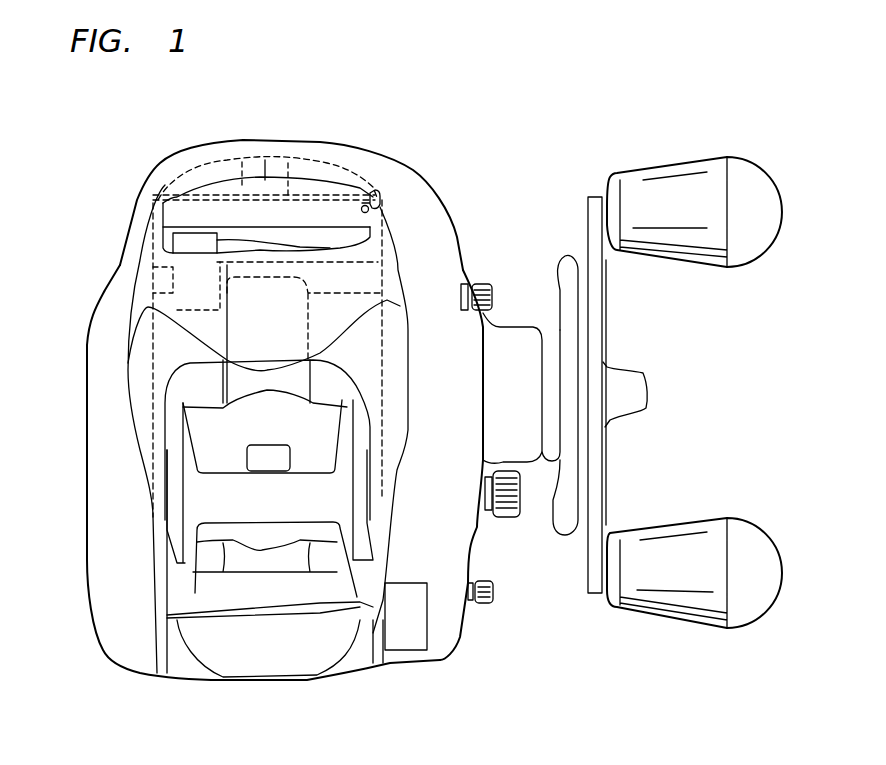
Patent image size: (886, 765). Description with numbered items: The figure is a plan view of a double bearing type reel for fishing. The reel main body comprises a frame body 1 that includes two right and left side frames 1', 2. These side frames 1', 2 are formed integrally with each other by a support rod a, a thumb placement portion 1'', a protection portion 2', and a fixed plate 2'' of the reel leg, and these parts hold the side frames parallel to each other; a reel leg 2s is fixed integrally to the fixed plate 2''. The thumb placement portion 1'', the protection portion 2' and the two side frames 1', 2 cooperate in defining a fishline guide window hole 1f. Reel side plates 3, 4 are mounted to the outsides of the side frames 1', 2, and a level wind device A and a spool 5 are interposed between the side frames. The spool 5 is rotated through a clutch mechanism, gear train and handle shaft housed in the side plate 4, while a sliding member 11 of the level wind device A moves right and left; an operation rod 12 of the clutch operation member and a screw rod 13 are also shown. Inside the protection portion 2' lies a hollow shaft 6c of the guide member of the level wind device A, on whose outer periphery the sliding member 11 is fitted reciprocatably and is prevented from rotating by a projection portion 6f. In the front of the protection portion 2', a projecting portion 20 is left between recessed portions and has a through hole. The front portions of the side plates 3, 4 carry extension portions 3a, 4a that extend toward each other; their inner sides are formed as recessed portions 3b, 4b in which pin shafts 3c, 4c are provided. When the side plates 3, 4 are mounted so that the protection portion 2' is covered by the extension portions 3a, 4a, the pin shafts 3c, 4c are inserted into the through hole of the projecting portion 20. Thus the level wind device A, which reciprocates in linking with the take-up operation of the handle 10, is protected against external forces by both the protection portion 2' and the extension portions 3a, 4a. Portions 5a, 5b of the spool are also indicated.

The frame body 1 is at (243, 472).
The side frame 1' is at (229, 429).
The thumb placement portion 1'' is at (213, 436).
The fishline guide window hole 1f is at (378, 188).
The side frame 2 is at (328, 422).
The protection portion 2' is at (268, 140).
The fixed plate 2'' is at (304, 416).
The projecting portion 20 is at (245, 161).
The reel leg 2s is at (223, 322).
The reel side plate 3 is at (88, 312).
The extension portion 3a is at (193, 150).
The recessed portion 3b is at (226, 159).
The pin shaft 3c is at (218, 170).
The reel side plate 4 is at (447, 200).
The extension portion 4a is at (345, 150).
The recessed portion 4b is at (303, 157).
The pin shaft 4c is at (322, 170).
The spool 5 is at (293, 533).
The lever upper part 5a is at (193, 435).
The lever lower part 5b is at (340, 600).
The hollow shaft 6c is at (153, 247).
The projection portion 6f is at (158, 270).
The handle 10 is at (603, 317).
The sliding member 11 is at (187, 247).
The operation rod 12 is at (270, 670).
The screw rod 13 is at (487, 283).
The level wind device A is at (332, 240).
The support rod a is at (247, 617).